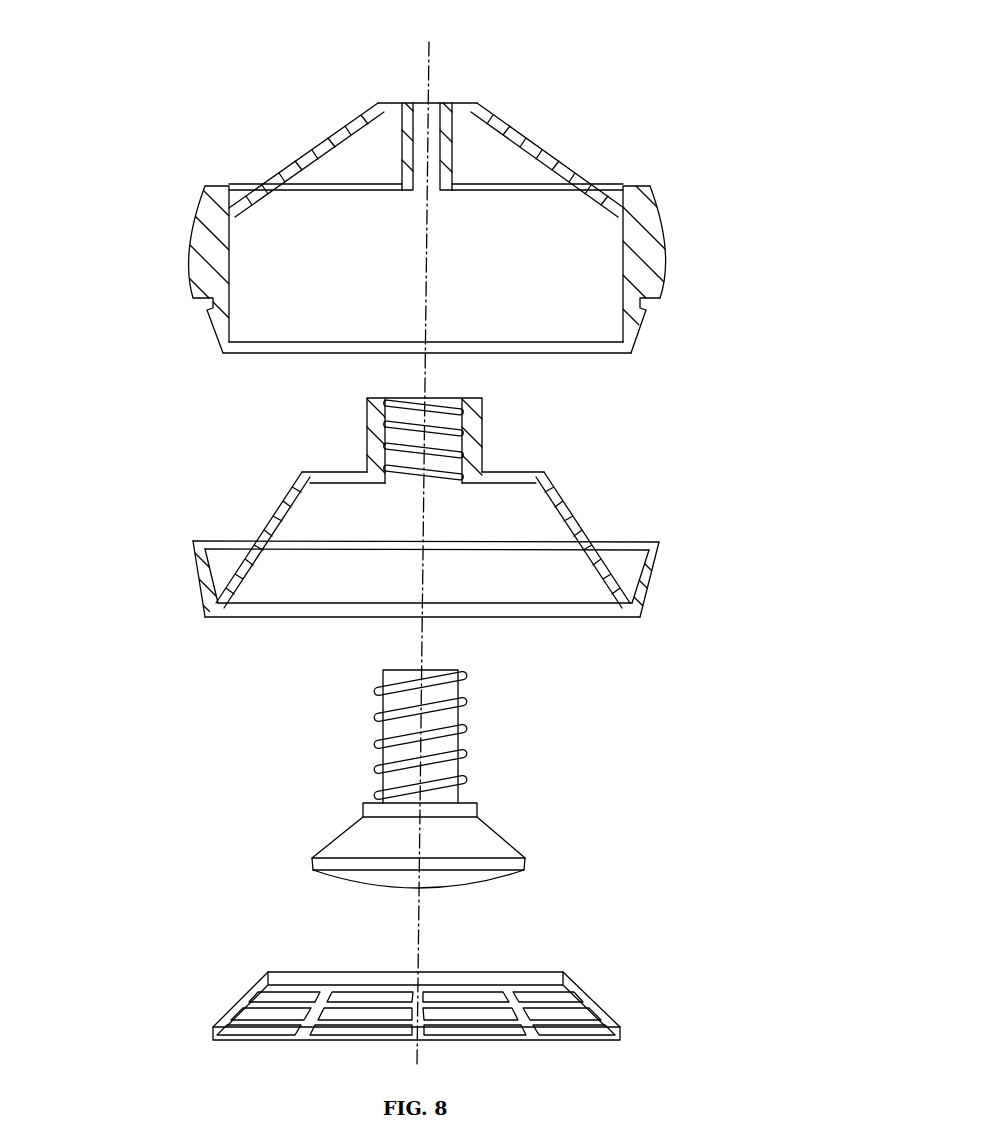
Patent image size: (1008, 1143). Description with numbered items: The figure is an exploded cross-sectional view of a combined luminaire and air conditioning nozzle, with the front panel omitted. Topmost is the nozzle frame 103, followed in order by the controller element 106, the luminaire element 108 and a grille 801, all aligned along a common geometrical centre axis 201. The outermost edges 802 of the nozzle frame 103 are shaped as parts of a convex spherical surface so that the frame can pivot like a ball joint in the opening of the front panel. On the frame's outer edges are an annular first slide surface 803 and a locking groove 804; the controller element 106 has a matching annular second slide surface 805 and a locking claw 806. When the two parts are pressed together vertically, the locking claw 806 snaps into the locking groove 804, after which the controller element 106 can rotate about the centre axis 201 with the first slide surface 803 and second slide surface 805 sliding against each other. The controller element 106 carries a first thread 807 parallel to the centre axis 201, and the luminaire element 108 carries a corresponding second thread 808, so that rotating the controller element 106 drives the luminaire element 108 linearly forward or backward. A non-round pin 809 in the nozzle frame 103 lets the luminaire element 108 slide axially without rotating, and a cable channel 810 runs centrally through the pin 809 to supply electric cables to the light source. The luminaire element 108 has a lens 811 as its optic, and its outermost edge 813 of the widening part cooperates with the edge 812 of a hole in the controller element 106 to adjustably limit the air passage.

The geometrical centre axis 201 is at (428, 62).
The nozzle frame 103 is at (463, 225).
The outermost edges 802 is at (667, 253).
The first slide surface 803 is at (637, 333).
The locking groove 804 is at (640, 304).
The pin 809 is at (452, 152).
The cable channel 810 is at (433, 107).
The controller element 106 is at (460, 518).
The second slide surface 805 is at (613, 543).
The locking claw 806 is at (633, 567).
The first thread 807 is at (448, 408).
The edge of a hole 812 is at (527, 547).
The luminaire element 108 is at (462, 787).
The second thread 808 is at (453, 707).
The lens 811 is at (488, 878).
The outermost edge 813 is at (527, 858).
The grille 801 is at (617, 983).